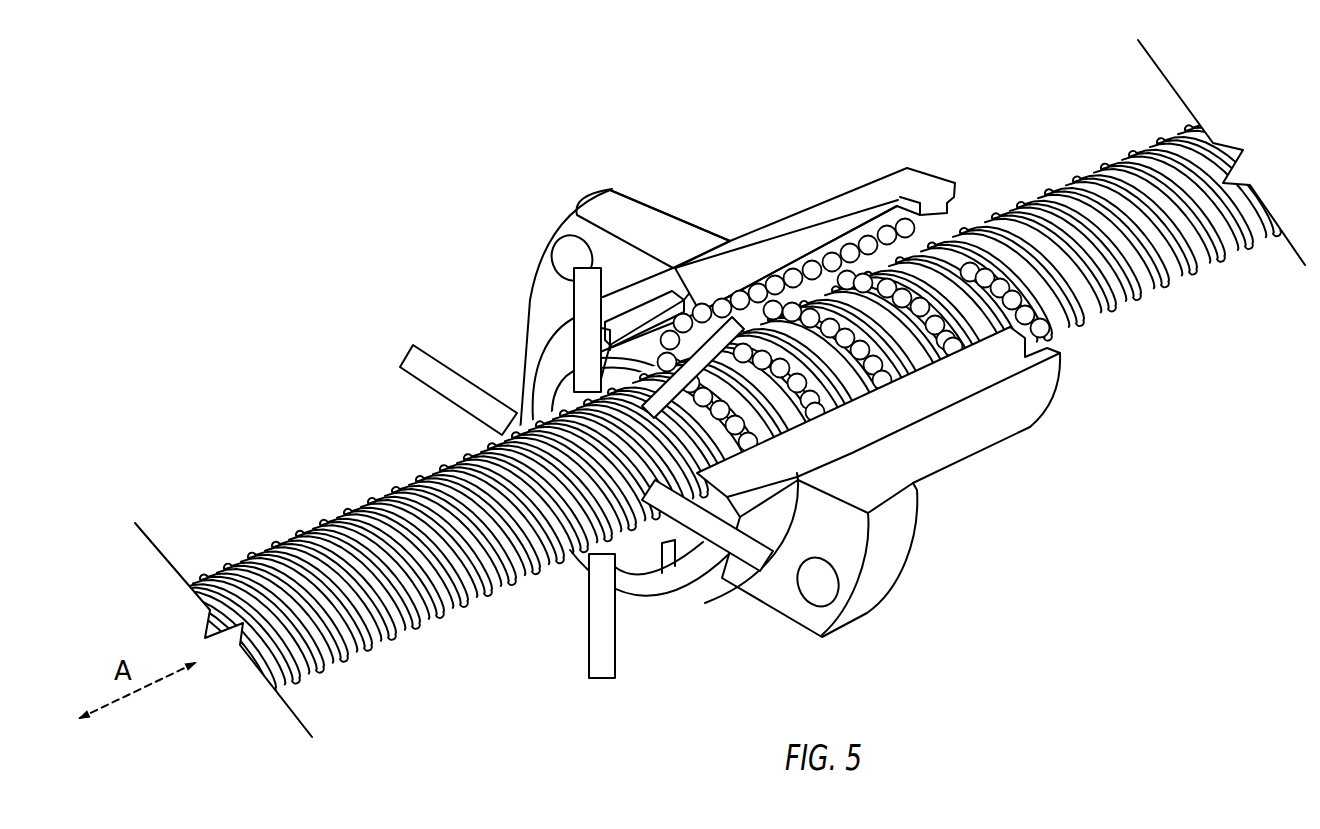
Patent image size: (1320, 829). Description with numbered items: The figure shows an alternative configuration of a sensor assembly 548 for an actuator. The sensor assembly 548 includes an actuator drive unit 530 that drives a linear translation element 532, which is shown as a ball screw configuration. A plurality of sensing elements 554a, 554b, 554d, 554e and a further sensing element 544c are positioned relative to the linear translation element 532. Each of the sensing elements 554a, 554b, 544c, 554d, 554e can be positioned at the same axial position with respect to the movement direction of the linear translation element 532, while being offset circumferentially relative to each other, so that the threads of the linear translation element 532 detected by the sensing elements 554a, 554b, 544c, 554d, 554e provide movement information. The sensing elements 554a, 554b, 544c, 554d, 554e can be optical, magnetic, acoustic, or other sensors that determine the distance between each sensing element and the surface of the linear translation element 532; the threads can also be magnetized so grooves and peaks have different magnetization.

The sensor assembly 548 is at (549, 124).
The linear translation element 532 is at (1178, 215).
The actuator drive unit 530 is at (943, 455).
The sensing element 554a is at (743, 553).
The sensing element 554b is at (707, 323).
The pin 544c is at (582, 295).
The sensing element 554d is at (417, 360).
The sensing element 554e is at (600, 642).